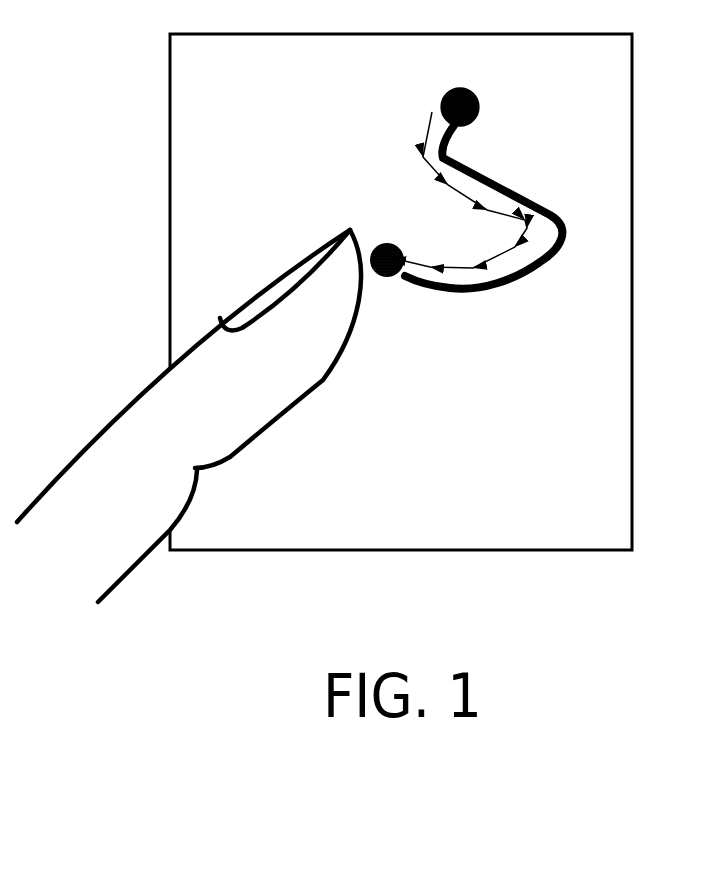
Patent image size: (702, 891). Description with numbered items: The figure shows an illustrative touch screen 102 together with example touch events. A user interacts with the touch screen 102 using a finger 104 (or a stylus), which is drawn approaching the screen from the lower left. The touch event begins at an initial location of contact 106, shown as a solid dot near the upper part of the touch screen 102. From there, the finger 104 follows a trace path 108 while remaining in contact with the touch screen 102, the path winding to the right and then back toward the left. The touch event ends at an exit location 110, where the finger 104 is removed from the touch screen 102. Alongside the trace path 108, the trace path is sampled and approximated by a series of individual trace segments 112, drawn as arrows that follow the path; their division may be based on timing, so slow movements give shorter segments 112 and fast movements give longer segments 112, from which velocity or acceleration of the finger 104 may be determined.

The touch screen 102 is at (236, 80).
The finger 104 is at (247, 422).
The initial location of contact 106 is at (480, 103).
The trace path 108 is at (517, 192).
The exit location 110 is at (390, 270).
The trace segments 112 is at (432, 170).